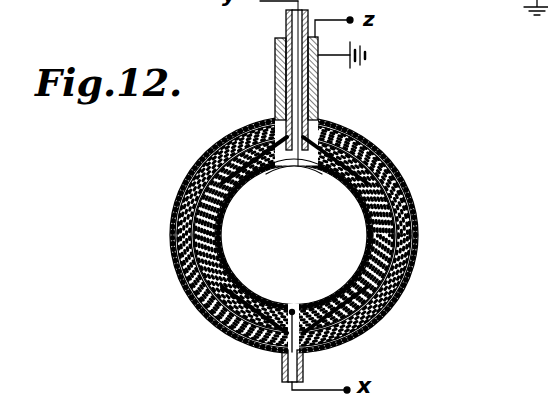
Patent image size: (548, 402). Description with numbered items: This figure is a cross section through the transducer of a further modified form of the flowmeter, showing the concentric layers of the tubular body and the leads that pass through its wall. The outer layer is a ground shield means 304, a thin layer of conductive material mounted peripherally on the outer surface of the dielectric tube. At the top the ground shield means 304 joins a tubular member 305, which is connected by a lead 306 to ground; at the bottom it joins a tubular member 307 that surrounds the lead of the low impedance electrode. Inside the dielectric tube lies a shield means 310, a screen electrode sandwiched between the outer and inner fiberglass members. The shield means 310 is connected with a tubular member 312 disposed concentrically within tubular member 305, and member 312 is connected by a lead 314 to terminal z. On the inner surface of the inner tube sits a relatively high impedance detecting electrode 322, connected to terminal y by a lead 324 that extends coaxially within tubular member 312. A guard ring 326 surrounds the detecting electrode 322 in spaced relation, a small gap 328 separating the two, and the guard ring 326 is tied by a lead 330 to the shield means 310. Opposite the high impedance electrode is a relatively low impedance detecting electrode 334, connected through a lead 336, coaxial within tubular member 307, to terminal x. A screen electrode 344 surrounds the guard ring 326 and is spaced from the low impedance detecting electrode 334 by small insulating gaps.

The ground shield means 304 is at (417, 229).
The tubular member 305 is at (277, 91).
The lead 306 is at (350, 68).
The tubular member 307 is at (282, 373).
The shield means 310 is at (210, 156).
The tubular member 312 is at (318, 108).
The lead 314 is at (352, 24).
The high impedance detecting electrode 322 is at (272, 166).
The lead 324 is at (287, 33).
The guard ring 326 is at (228, 199).
The gap 328 is at (226, 188).
The lead 330 is at (196, 188).
The low impedance detecting electrode 334 is at (290, 307).
The lead 336 is at (301, 314).
The screen electrode 344 is at (222, 240).